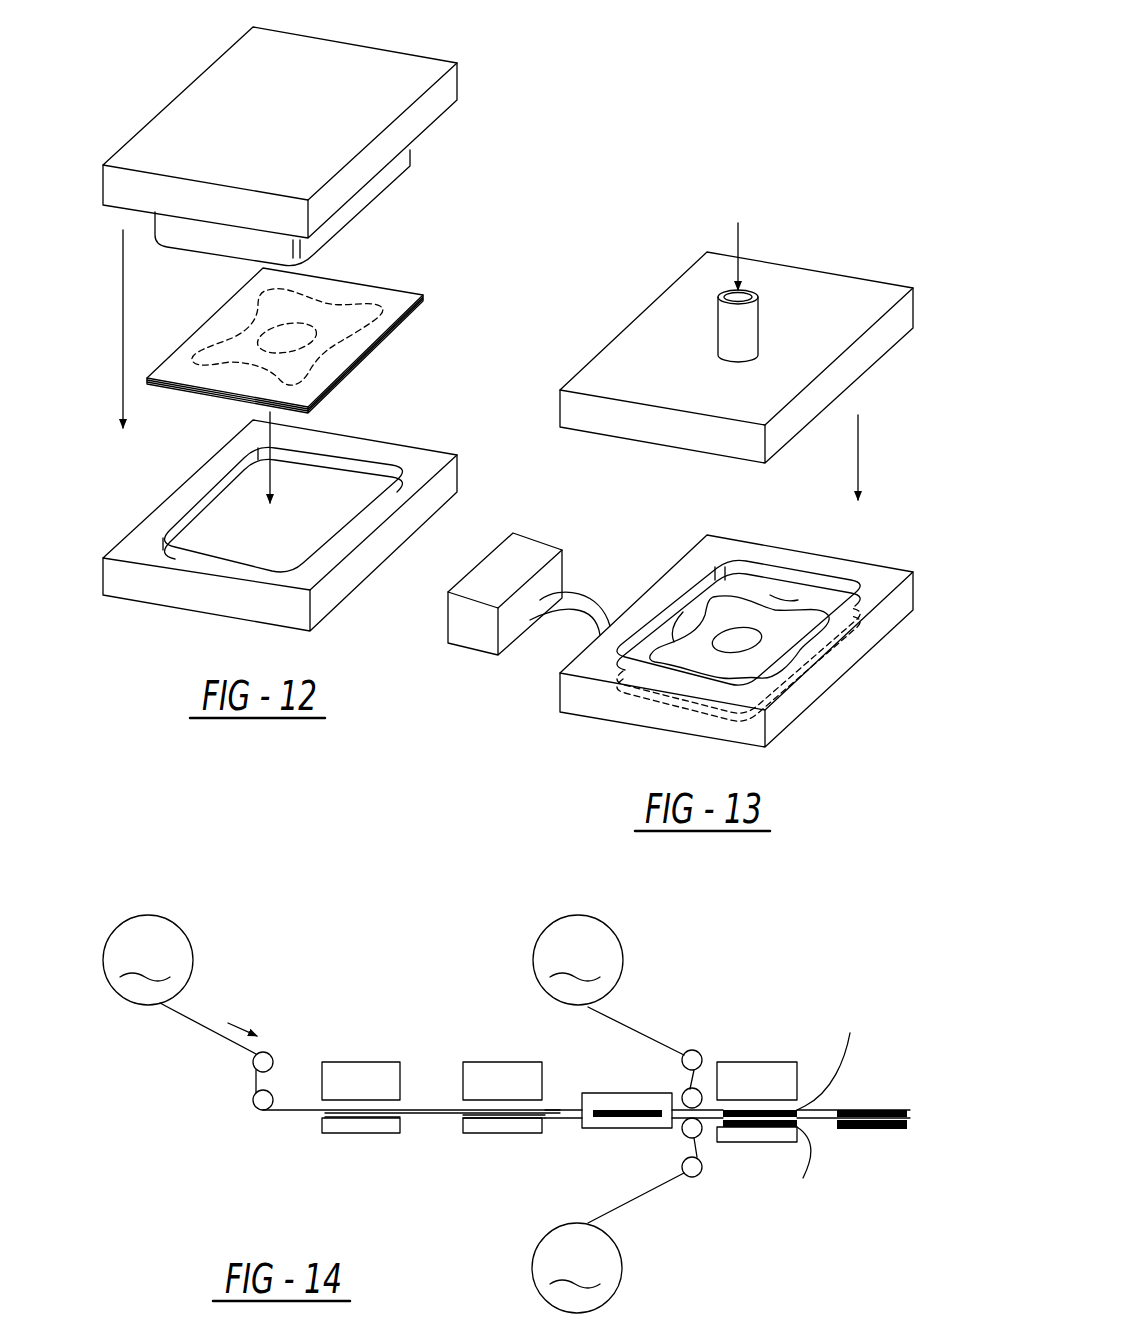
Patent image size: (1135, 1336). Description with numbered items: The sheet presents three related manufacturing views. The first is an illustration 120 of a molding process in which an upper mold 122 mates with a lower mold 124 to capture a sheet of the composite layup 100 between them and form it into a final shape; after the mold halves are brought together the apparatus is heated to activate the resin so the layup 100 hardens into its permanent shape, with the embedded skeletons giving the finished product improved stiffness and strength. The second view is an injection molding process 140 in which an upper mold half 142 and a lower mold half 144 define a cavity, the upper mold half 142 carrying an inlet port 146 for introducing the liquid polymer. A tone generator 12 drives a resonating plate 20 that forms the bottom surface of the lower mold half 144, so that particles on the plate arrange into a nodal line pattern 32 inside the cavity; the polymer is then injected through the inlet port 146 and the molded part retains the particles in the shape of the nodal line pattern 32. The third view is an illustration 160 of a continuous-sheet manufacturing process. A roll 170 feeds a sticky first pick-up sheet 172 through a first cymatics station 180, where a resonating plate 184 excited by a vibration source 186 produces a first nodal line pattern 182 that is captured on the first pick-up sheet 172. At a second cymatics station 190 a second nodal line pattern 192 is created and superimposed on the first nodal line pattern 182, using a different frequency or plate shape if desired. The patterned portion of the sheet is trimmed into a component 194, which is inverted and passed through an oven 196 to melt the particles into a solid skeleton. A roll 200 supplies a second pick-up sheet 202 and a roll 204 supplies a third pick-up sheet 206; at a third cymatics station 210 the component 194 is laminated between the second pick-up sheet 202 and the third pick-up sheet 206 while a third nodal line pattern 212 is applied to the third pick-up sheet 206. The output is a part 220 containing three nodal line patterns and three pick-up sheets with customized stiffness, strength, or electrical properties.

In FIG. 13, the tone generator 12 is at (473, 650).
In FIG. 13, the resonating plate 20 is at (710, 677).
In FIG. 13, the nodal line pattern 32 is at (812, 600).
In FIG. 12, the layup 100 is at (388, 292).
In FIG. 12, the illustration of a molding process 120 is at (472, 167).
In FIG. 12, the upper mold 122 is at (424, 58).
In FIG. 12, the lower mold 124 is at (208, 615).
In FIG. 13, the injection molding process 140 is at (822, 224).
In FIG. 13, the upper mold half 142 is at (878, 360).
In FIG. 13, the lower mold half 144 is at (877, 643).
In FIG. 13, the inlet port 146 is at (717, 327).
In FIG. 14, the illustration of a manufacturing process 160 is at (805, 1006).
In FIG. 14, the roll 170 is at (148, 960).
In FIG. 14, the first pick-up sheet 172 is at (217, 1027).
In FIG. 14, the first cymatics station 180 is at (345, 1000).
In FIG. 14, the first nodal line pattern 182 is at (325, 1117).
In FIG. 14, the resonating plate 184 is at (370, 1135).
In FIG. 14, the vibration source 186 is at (360, 1062).
In FIG. 14, the second cymatics station 190 is at (492, 1028).
In FIG. 14, the second nodal line pattern 192 is at (472, 1113).
In FIG. 14, the component 194 is at (630, 1118).
In FIG. 14, the oven 196 is at (632, 1093).
In FIG. 14, the roll 200 is at (578, 960).
In FIG. 14, the second pick-up sheet 202 is at (637, 1028).
In FIG. 14, the roll 204 is at (577, 1268).
In FIG. 14, the third pick-up sheet 206 is at (663, 1208).
In FIG. 14, the third cymatics station 210 is at (748, 1022).
In FIG. 14, the third nodal line pattern 212 is at (811, 1174).
In FIG. 14, the part 220 is at (877, 1140).